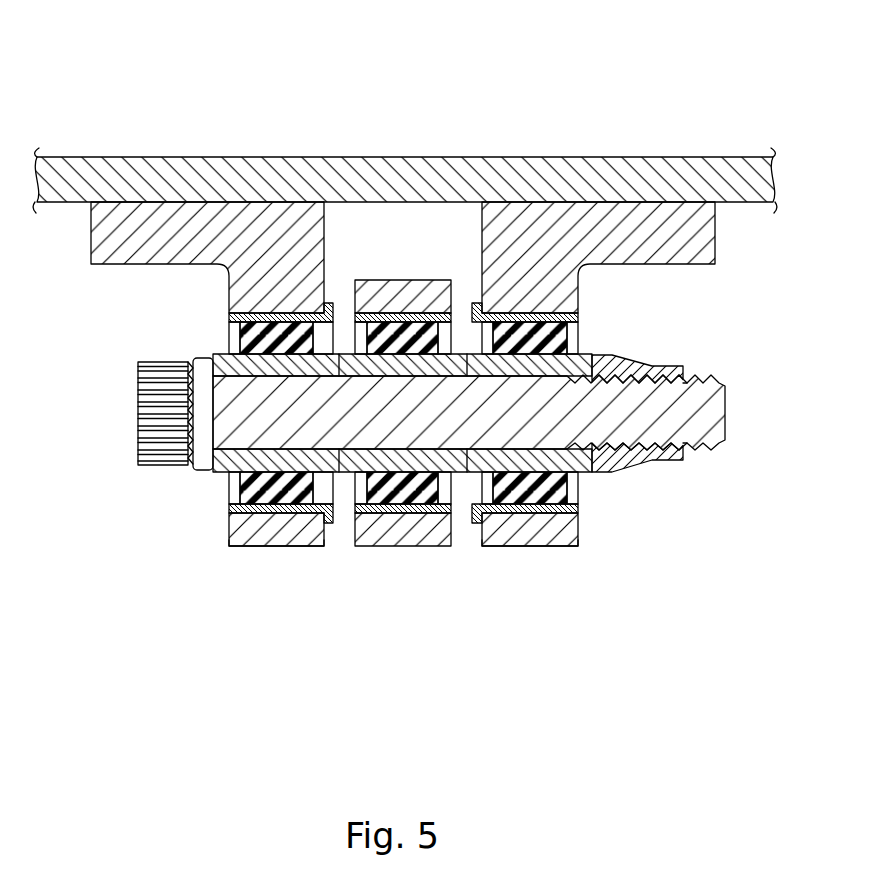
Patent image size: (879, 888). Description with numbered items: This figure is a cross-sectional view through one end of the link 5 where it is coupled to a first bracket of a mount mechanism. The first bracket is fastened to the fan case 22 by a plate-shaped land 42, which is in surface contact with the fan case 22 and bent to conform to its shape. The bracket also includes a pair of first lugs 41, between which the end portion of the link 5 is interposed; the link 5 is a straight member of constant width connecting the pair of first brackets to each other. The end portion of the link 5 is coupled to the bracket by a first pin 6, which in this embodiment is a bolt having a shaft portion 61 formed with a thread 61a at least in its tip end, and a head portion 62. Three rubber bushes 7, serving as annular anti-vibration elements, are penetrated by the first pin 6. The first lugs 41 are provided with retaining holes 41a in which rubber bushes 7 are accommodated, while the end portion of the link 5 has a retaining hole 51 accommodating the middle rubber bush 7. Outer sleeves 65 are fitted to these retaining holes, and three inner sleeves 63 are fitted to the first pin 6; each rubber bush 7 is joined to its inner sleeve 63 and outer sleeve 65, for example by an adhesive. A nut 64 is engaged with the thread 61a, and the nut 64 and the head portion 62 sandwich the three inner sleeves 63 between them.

The fan case 22 is at (433, 185).
The land 42 is at (160, 215).
The link 5 is at (392, 546).
The outer sleeve 65 is at (262, 320).
The inner sleeve 63 is at (330, 500).
The rubber bush 7 is at (245, 546).
The first lug 41 is at (263, 546).
The retaining hole 41a is at (293, 546).
The retaining hole 51 is at (412, 546).
The first pin 6 is at (137, 440).
The shaft portion 61 is at (718, 410).
The thread 61a is at (692, 455).
The nut 64 is at (640, 355).
The head portion 62 is at (138, 400).